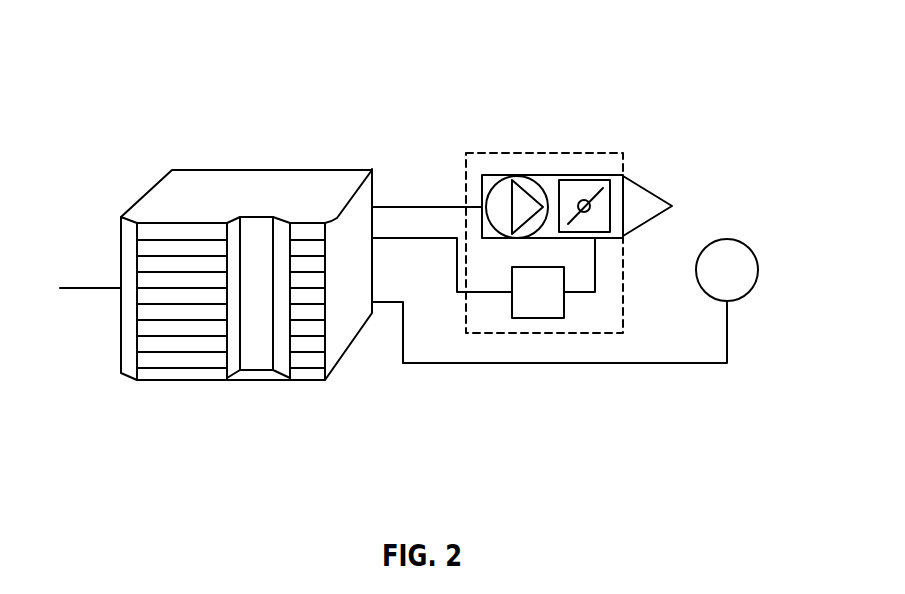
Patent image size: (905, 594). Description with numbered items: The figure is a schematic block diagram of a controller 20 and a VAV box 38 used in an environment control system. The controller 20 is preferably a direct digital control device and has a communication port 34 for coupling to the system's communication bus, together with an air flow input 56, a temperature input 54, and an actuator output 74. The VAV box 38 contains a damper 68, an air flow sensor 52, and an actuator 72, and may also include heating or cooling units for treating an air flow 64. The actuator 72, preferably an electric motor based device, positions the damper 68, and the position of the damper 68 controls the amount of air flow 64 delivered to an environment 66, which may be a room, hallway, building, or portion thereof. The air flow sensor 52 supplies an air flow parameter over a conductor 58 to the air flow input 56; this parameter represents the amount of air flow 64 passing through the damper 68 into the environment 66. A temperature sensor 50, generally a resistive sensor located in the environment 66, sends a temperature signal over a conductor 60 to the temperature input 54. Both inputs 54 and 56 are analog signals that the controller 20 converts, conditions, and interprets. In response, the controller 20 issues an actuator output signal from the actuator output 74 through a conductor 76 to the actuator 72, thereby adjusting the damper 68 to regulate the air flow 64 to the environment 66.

The controller 20 is at (289, 169).
The communication port 34 is at (120, 288).
The VAV box 38 is at (482, 153).
The temperature sensor 50 is at (752, 292).
The air flow sensor 52 is at (534, 175).
The temperature input 54 is at (375, 305).
The air flow input 56 is at (376, 207).
The conductor 58 is at (410, 207).
The conductor 60 is at (613, 367).
The air flow 64 is at (636, 188).
The environment 66 is at (738, 213).
The damper 68 is at (573, 175).
The actuator 72 is at (547, 318).
The actuator output 74 is at (381, 241).
The conductor 76 is at (413, 240).